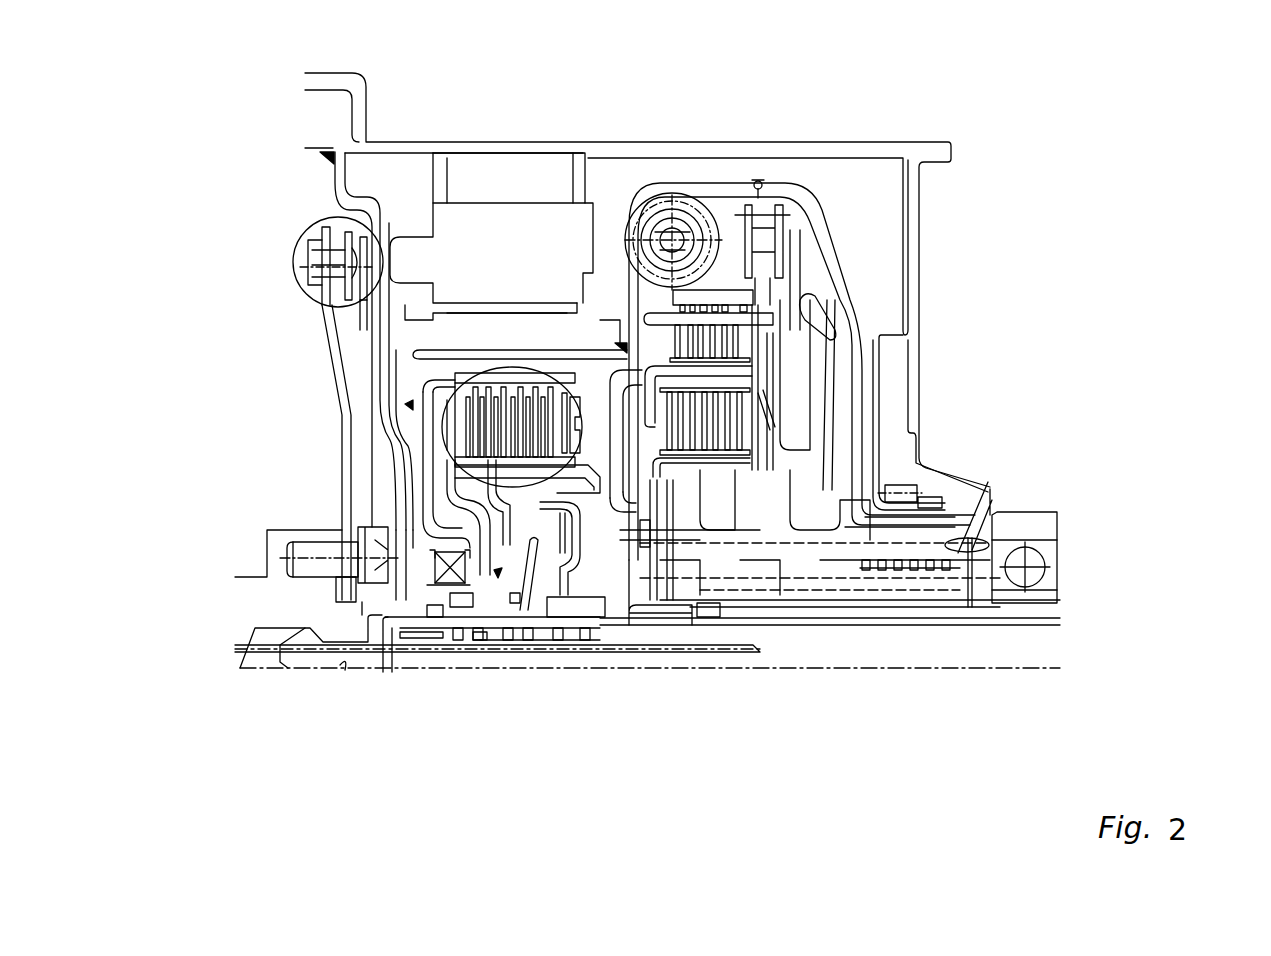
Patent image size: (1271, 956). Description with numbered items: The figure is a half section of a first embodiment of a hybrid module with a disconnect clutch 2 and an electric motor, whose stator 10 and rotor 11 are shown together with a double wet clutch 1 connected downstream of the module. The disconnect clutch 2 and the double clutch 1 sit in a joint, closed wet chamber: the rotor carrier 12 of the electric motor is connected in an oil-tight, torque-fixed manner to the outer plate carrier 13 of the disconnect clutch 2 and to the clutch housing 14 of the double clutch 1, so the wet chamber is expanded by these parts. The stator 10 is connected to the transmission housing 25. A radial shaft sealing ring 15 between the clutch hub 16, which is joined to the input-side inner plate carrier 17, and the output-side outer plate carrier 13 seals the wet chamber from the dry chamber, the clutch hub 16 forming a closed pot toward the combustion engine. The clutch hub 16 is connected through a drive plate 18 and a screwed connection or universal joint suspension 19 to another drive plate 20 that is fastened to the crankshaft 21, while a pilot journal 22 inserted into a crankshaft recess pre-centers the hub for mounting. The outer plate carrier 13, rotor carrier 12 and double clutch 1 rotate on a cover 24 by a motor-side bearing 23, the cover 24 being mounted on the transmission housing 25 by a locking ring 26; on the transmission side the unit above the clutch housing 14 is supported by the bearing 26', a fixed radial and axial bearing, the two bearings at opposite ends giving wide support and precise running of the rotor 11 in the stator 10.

The double wet clutch 1 is at (838, 250).
The disconnect clutch 2 is at (500, 368).
The stator 10 is at (540, 222).
The rotor 11 is at (567, 338).
The rotor carrier 12 is at (597, 357).
The outer plate carrier 13 is at (418, 395).
The clutch housing 14 is at (698, 192).
The radial shaft sealing ring 15 is at (462, 607).
The clutch hub 16 is at (403, 623).
The inner plate carrier 17 is at (455, 482).
The drive plate 18 is at (394, 492).
The universal joint suspension 19 is at (348, 312).
The drive plate 20 is at (355, 458).
The crankshaft 21 is at (236, 602).
The pilot journal 22 is at (347, 663).
The motor-side bearing 23 is at (460, 570).
The cover 24 is at (338, 173).
The transmission housing 25 is at (821, 150).
The locking ring 26 is at (278, 161).
The transmission-side bearing 26' is at (1054, 542).